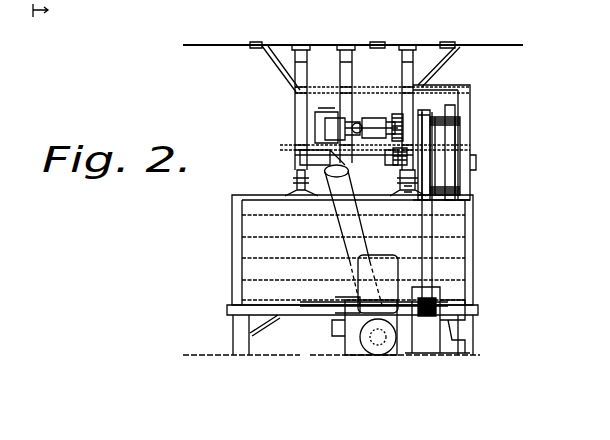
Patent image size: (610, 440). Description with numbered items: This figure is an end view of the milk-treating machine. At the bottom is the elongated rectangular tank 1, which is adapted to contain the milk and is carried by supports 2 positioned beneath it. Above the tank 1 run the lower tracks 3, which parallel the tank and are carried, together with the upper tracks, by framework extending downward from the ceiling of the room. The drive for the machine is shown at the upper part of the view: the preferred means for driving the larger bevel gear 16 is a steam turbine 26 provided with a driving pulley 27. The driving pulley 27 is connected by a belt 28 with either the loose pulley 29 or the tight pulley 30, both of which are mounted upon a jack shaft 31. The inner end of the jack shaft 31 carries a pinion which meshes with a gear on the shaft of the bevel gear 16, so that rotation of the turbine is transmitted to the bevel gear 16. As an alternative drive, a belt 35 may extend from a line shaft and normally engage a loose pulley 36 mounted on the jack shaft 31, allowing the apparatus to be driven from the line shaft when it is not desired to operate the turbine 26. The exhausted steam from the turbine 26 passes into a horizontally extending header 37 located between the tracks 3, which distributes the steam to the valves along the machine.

The tank 1 is at (255, 248).
The supports 2 is at (245, 333).
The tracks 3 is at (40, 19).
The bevel gear 16 is at (360, 124).
The steam turbine 26 is at (382, 270).
The driving pulley 27 is at (442, 294).
The belt 28 is at (428, 236).
The loose pulley 29 is at (413, 196).
The tight pulley 30 is at (442, 206).
The jack shaft 31 is at (397, 161).
The belt 35 is at (454, 124).
The loose pulley 36 is at (460, 138).
The header 37 is at (346, 227).